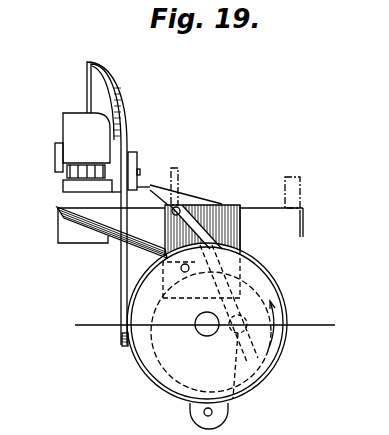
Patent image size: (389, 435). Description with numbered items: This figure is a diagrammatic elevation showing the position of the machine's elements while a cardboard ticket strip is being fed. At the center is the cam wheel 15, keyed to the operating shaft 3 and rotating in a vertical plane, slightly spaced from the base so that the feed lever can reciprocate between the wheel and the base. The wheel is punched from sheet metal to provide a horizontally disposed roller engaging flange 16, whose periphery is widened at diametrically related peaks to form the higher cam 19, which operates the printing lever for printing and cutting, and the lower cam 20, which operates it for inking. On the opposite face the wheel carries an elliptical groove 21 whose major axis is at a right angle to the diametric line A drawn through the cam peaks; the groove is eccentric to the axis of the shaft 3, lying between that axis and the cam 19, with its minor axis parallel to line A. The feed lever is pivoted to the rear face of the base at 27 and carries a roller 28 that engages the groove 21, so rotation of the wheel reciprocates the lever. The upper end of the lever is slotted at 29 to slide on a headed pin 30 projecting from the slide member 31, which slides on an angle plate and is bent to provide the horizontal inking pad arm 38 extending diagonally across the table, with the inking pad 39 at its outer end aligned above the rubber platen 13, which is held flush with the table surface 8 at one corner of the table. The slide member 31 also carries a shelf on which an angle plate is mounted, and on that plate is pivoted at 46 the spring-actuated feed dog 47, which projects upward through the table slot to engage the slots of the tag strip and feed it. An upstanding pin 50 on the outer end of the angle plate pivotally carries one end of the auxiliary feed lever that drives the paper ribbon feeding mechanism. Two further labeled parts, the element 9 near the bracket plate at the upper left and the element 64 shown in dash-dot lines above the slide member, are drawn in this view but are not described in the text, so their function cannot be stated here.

The operating shaft 3 is at (198, 320).
The plane surface 8 is at (252, 207).
The bracket plate 9 is at (140, 172).
The rubber platen 13 is at (57, 210).
The cam wheel 15 is at (280, 357).
The roller engaging flange 16 is at (246, 259).
The cam 19 is at (285, 308).
The cam 20 is at (124, 346).
The elliptical groove 21 is at (176, 395).
The pivot 27 is at (214, 412).
The roller 28 is at (259, 350).
The slot 29 is at (196, 241).
The headed pin 30 is at (182, 213).
The slide member 31 is at (241, 222).
The inking pad arm 38 is at (147, 188).
The inking pad 39 is at (80, 212).
The pivot 46 is at (182, 270).
The feed dog 47 is at (90, 232).
The upstanding pin 50 is at (297, 178).
The guide 64 is at (177, 168).
The diametric line A is at (308, 325).